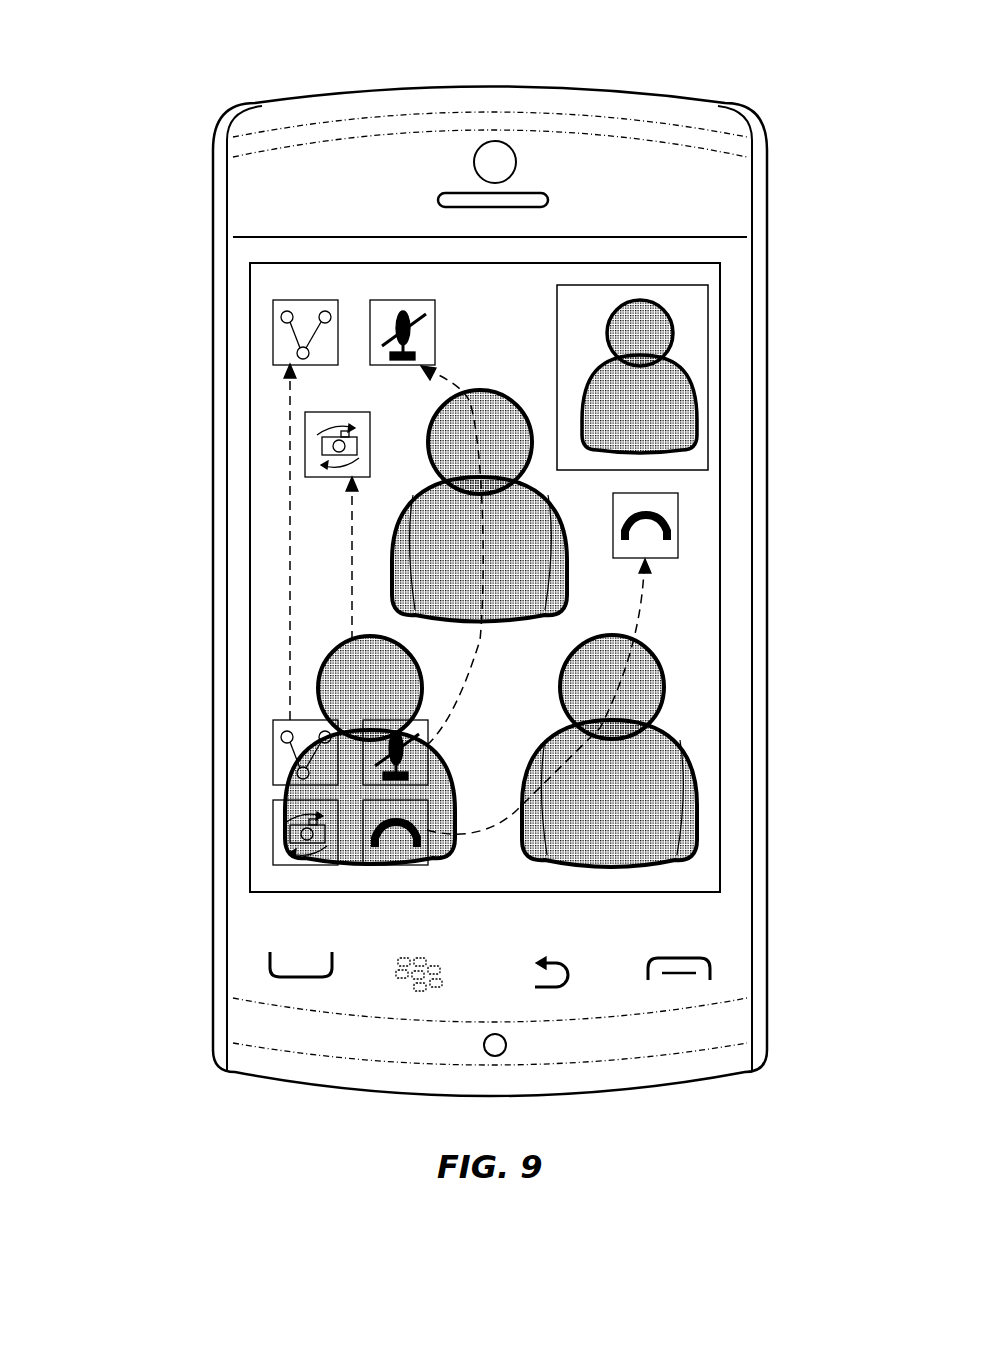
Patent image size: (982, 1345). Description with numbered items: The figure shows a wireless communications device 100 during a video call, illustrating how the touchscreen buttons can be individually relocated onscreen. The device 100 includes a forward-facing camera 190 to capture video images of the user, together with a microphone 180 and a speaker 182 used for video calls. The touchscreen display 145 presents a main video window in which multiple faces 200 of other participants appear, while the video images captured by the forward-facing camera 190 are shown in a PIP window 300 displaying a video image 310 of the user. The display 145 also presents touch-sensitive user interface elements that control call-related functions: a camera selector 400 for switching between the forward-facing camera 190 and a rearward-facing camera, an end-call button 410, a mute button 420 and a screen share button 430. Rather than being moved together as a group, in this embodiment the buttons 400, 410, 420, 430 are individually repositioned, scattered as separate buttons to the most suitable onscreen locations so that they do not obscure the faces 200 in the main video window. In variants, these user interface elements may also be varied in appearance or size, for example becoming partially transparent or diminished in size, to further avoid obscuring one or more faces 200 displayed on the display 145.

The communications device 100 is at (200, 253).
The touchscreen display 145 is at (275, 405).
The microphone 180 is at (500, 1047).
The speaker 182 is at (440, 200).
The forward-facing camera 190 is at (490, 160).
The face 200 is at (393, 505).
The PIP window 300 is at (690, 332).
The video image of the user 310 is at (640, 403).
The camera selector 400 is at (303, 452).
The end-call button 410 is at (678, 527).
The mute button 420 is at (388, 300).
The screen share button 430 is at (283, 340).